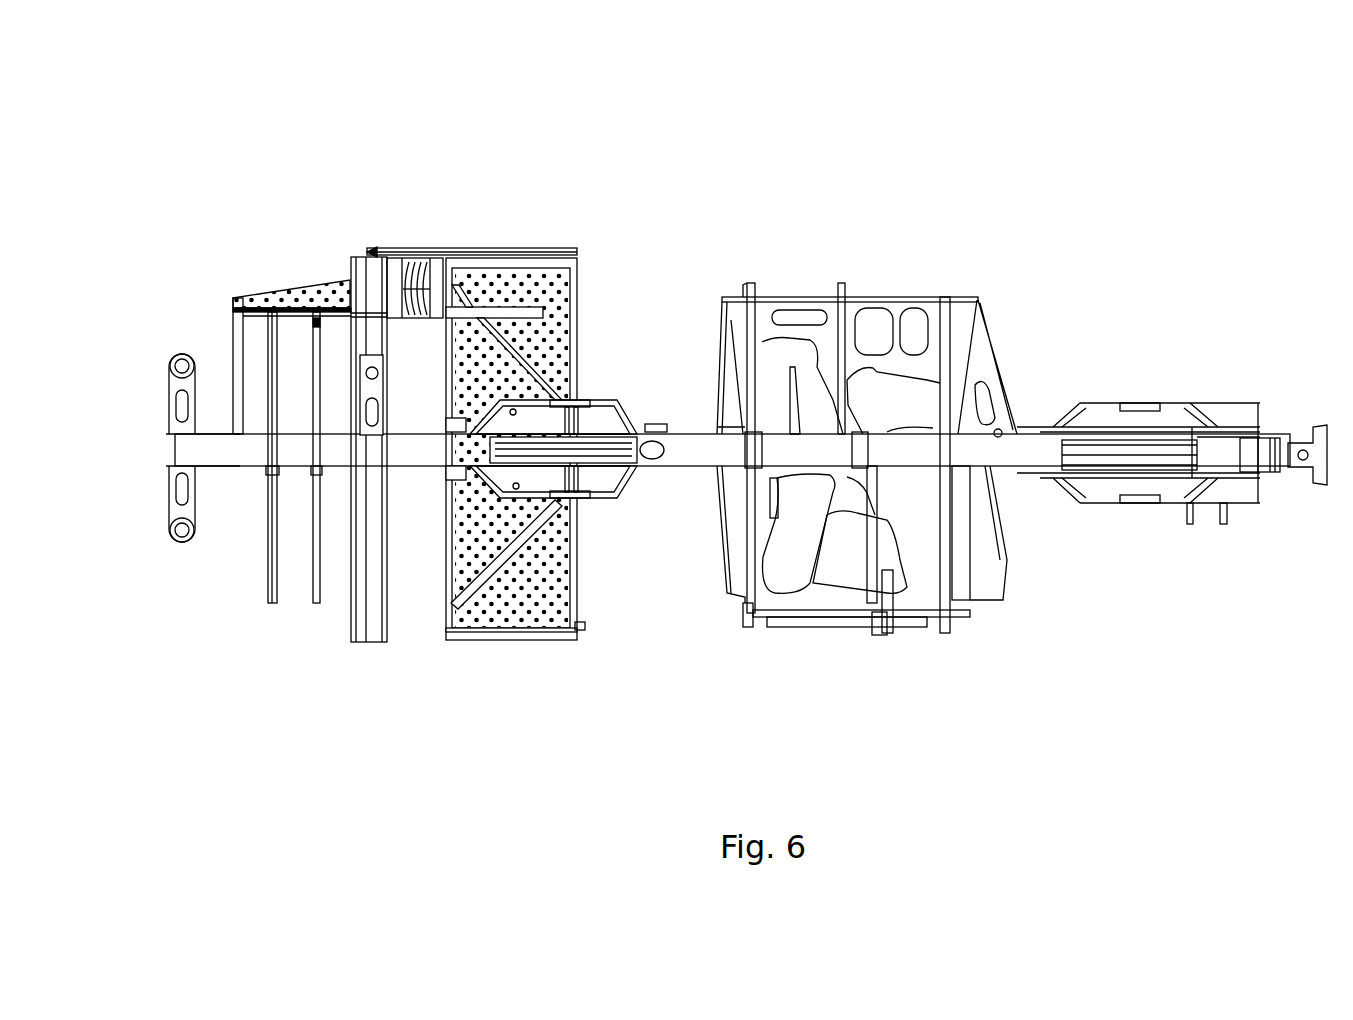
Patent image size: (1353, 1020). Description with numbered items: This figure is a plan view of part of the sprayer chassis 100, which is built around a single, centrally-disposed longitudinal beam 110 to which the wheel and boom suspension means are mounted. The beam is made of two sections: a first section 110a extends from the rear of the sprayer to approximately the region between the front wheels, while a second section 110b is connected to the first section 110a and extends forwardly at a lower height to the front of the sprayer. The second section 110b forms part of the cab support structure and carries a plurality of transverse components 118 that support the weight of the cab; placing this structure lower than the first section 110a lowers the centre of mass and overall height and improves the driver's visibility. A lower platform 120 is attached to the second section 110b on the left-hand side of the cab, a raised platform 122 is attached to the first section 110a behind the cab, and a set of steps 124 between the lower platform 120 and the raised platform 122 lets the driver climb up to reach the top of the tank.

The chassis 100 is at (750, 172).
The longitudinal beam 110 is at (691, 458).
The first section 110a is at (1018, 458).
The second section 110b is at (303, 466).
The transverse components 118 is at (172, 401).
The lower platform 120 is at (345, 256).
The raised platform 122 is at (577, 250).
The set of steps 124 is at (429, 266).